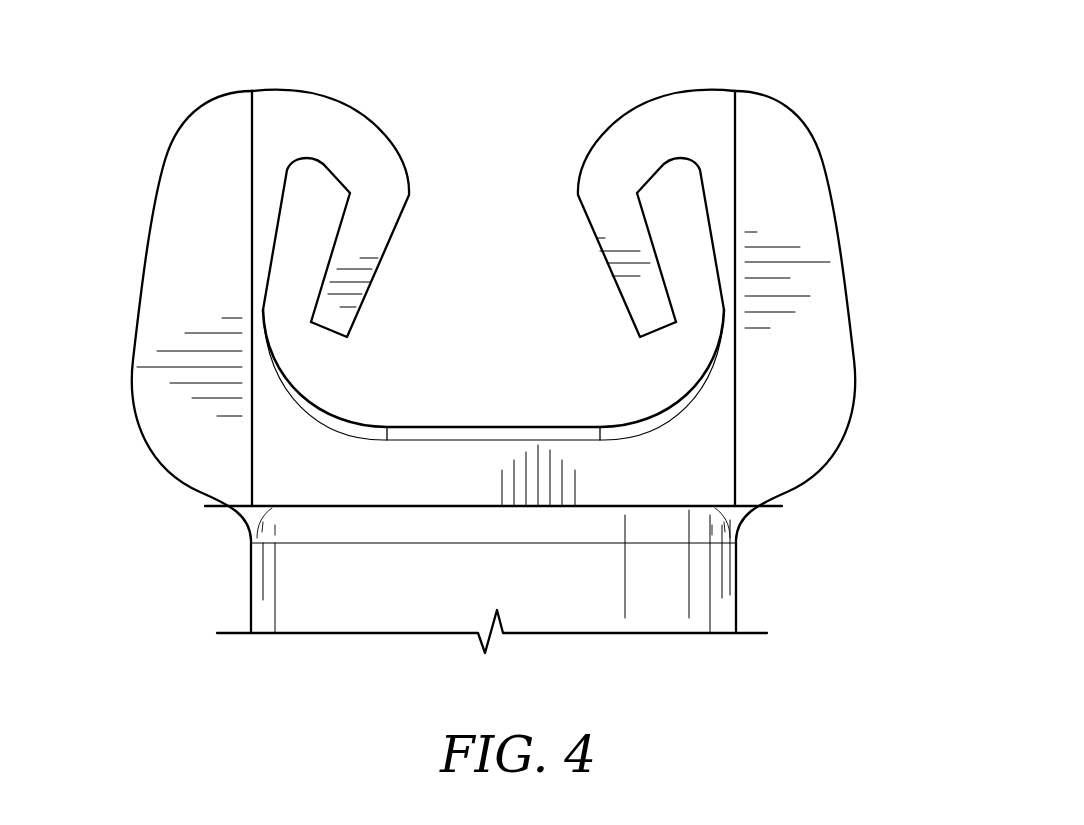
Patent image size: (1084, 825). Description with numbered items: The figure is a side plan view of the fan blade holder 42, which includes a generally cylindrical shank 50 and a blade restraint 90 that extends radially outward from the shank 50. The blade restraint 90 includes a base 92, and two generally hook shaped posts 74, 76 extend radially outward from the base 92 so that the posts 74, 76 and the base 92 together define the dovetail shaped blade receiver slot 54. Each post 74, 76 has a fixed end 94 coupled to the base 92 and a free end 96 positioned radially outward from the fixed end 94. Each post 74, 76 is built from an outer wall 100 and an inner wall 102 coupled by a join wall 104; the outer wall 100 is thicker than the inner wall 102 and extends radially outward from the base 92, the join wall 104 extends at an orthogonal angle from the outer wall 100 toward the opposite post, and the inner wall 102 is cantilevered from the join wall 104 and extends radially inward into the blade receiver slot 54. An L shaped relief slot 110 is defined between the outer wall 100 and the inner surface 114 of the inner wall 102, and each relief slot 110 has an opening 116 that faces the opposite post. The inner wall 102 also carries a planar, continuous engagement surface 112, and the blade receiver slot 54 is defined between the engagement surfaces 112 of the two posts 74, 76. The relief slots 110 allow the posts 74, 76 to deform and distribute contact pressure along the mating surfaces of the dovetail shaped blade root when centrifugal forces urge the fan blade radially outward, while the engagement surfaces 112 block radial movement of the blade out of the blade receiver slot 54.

The fan blade holder 42 is at (790, 565).
The shank 50 is at (717, 625).
The blade receiver slot 54 is at (503, 284).
The post 74 is at (315, 108).
The post 76 is at (725, 100).
The blade restraint 90 is at (856, 220).
The base 92 is at (700, 493).
The fixed end 94 is at (290, 423).
The free end 96 is at (348, 334).
The outer wall 100 is at (150, 242).
The inner wall 102 is at (368, 277).
The join wall 104 is at (262, 100).
The relief slot 110 is at (319, 207).
The engagement surface 112 is at (381, 262).
The inner surface 114 is at (331, 258).
The opening 116 is at (350, 359).